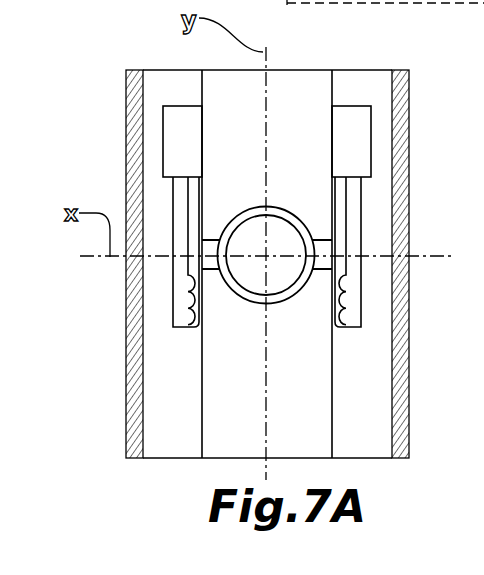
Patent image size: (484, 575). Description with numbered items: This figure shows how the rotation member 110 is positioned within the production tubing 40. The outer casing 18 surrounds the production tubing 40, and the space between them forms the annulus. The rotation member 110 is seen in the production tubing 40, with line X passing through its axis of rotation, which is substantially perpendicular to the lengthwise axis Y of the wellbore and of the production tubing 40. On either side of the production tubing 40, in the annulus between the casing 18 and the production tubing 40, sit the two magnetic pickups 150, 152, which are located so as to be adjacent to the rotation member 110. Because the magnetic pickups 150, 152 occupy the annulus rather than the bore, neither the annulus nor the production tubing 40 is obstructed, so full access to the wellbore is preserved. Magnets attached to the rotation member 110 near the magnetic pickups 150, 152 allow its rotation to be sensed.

The casing 18 is at (127, 298).
The production tubing 40 is at (203, 422).
The rotation member 110 is at (285, 206).
The magnetic pickup 150 is at (346, 329).
The magnetic pickup 152 is at (189, 329).